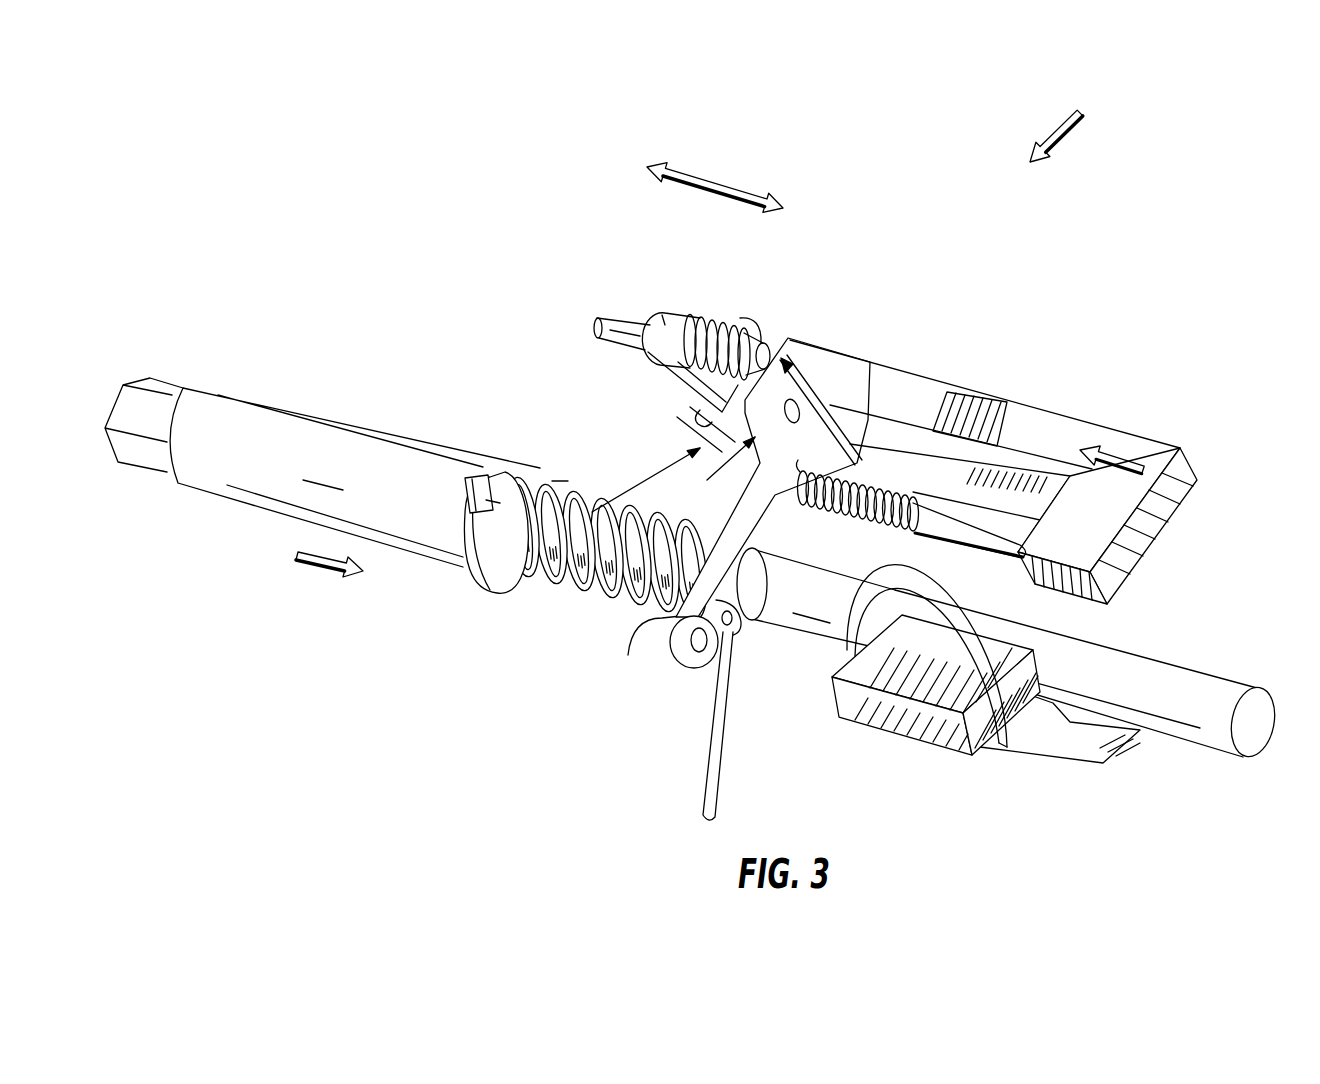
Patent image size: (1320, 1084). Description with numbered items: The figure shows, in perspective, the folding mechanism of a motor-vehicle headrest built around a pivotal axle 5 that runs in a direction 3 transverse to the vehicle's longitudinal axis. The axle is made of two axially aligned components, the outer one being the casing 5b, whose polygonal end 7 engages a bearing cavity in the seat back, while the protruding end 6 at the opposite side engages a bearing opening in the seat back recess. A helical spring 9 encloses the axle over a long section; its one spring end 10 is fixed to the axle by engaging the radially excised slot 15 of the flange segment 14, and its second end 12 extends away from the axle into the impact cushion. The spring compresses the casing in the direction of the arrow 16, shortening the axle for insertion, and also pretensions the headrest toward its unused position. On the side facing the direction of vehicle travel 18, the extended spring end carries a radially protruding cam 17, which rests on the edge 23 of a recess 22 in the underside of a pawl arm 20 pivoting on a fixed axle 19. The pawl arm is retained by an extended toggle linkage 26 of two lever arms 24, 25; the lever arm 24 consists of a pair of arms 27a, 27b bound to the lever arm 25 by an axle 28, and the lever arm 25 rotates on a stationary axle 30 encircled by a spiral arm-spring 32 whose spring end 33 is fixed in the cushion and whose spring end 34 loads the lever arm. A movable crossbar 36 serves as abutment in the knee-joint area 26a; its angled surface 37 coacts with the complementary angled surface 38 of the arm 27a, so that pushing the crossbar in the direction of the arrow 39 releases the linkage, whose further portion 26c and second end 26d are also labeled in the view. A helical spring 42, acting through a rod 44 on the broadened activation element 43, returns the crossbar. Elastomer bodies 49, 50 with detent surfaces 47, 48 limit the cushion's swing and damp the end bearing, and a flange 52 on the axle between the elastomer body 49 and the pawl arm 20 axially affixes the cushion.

The direction transverse to the longitudinal axis of the vehicle 3 is at (720, 180).
The pivotal axle 5 is at (1174, 670).
The casing 5b is at (268, 417).
The protruding end 6 is at (1260, 713).
The polygonal end 7 is at (141, 407).
The helical spring 9 is at (560, 478).
The spring end 10 is at (493, 503).
The second end of the helical spring 12 is at (710, 753).
The flange segment 14 is at (490, 567).
The radially excised slot 15 is at (470, 500).
The arrow 16 is at (317, 567).
The cam 17 is at (737, 620).
The direction of vehicle travel 18 is at (1060, 123).
The axle 19 is at (700, 650).
The pawl arm 20 is at (670, 652).
The recess 22 is at (657, 630).
The edge 23 is at (780, 552).
The lever arm 24 is at (817, 447).
The lever arm 25 is at (673, 312).
The toggle linkage 26 is at (560, 557).
The knee joint area 26a is at (880, 478).
The spring pin portion 26c is at (662, 318).
The second end of the toggle linkage 26d is at (917, 537).
The arm 27a is at (857, 447).
The arm 27b is at (687, 403).
The axle 28 is at (673, 477).
The axle 30 is at (613, 310).
The spiral arm-spring 32 is at (707, 347).
The spring end 33 is at (763, 323).
The spring end 34 is at (697, 434).
The crossbar 36 is at (1027, 423).
The angled surface 37 is at (837, 413).
The angled surface 38 is at (797, 400).
The arrow 39 is at (1123, 457).
The helical spring 42 is at (960, 403).
The activation element 43 is at (1107, 508).
The rod 44 is at (985, 530).
The detent surface 47 is at (957, 753).
The detent surface 48 is at (1067, 740).
The elastomer body 49 is at (885, 713).
The elastomer body 50 is at (1113, 743).
The flange 52 is at (1007, 735).